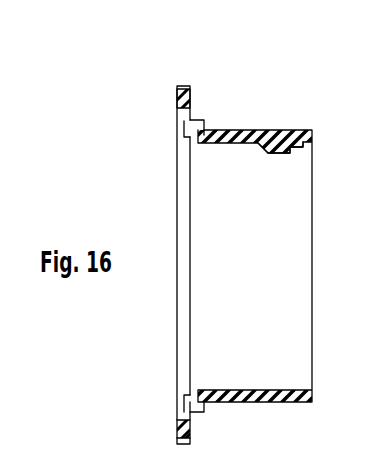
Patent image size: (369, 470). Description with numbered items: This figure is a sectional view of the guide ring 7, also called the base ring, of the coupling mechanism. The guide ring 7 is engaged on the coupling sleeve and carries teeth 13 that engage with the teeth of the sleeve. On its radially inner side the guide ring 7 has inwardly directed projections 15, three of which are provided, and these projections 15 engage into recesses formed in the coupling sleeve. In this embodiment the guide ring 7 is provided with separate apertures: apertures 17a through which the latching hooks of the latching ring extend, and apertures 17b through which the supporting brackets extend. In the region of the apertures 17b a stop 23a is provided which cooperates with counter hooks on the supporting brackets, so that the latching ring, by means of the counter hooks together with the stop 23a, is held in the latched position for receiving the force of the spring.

The guide ring 7 is at (264, 116).
The teeth 13 is at (183, 86).
The projections 15 is at (283, 153).
The apertures 17a is at (184, 402).
The apertures 17b is at (177, 121).
The stop 23a is at (199, 120).